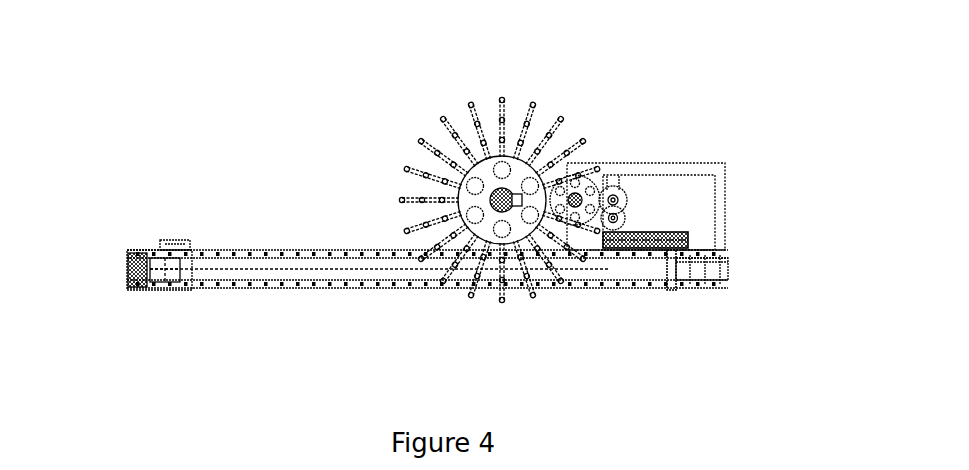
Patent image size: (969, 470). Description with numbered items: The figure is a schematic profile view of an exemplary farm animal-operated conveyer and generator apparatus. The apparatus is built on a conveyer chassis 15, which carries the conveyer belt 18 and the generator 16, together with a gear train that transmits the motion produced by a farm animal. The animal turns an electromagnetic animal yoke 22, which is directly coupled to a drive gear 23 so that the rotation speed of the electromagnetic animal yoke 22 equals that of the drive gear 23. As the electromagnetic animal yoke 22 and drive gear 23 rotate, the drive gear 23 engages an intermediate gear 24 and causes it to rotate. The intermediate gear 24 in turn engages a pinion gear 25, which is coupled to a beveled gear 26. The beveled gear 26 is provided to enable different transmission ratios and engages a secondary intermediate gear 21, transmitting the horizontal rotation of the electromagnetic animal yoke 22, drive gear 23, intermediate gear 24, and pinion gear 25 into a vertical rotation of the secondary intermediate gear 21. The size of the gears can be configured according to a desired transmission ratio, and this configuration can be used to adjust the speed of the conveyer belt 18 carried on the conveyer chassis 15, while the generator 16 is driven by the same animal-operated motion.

The conveyer chassis 15 is at (112, 137).
The generator 16 is at (114, 212).
The conveyer belt 18 is at (427, 156).
The secondary intermediate gear 21 is at (623, 234).
The electromagnetic animal yoke 22 is at (317, 223).
The drive gear 23 is at (432, 309).
The intermediate gear 24 is at (551, 271).
The pinion gear 25 is at (630, 218).
The beveled gear 26 is at (680, 252).